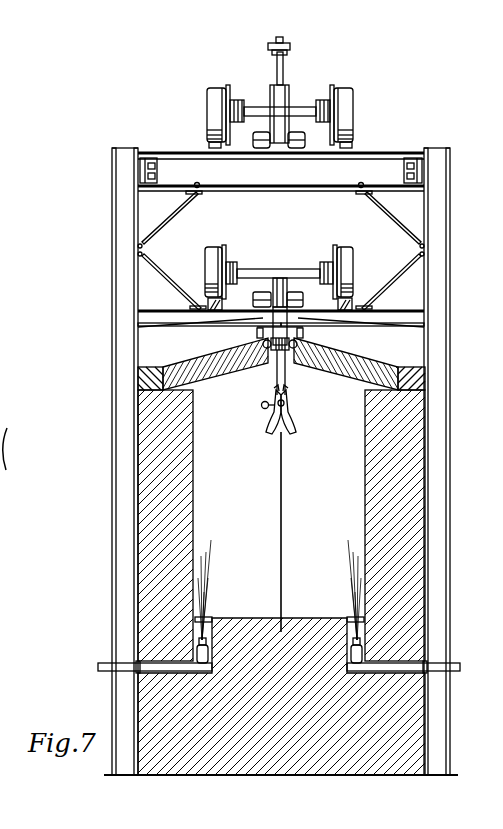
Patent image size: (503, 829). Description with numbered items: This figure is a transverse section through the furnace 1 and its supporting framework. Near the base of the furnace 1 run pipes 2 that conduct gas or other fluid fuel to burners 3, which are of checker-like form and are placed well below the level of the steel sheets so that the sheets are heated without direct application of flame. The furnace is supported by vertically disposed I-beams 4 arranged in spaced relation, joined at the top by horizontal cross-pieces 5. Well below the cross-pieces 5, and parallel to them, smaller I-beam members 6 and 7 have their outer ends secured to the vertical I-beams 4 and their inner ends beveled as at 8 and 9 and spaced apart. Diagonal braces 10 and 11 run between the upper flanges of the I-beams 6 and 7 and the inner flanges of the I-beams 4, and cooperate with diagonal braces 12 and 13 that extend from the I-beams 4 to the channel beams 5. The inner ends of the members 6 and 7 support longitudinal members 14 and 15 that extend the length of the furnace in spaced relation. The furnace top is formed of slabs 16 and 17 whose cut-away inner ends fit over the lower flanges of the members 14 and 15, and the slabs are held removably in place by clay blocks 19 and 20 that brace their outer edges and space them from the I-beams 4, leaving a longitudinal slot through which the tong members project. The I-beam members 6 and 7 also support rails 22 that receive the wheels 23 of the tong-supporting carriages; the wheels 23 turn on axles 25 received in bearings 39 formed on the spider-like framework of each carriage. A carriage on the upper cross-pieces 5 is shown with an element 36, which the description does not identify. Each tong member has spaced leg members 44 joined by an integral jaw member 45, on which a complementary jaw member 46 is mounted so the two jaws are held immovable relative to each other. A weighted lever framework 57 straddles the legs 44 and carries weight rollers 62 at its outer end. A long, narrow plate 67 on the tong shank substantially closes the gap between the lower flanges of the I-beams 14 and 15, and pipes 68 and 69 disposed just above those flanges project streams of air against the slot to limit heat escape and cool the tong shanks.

The furnace 1 is at (165, 514).
The pipes 2 is at (130, 667).
The burners 3 is at (212, 619).
The I-beams 4 is at (120, 563).
The top cross-pieces 5 is at (372, 172).
The I-beam member 6 is at (150, 318).
The I-beam member 7 is at (400, 323).
The beveled inner end 8 is at (220, 329).
The beveled inner end 9 is at (340, 329).
The diagonal brace 10 is at (158, 286).
The diagonal brace 11 is at (405, 284).
The diagonal brace 12 is at (162, 214).
The diagonal brace 13 is at (392, 214).
The longitudinal member 14 is at (257, 332).
The longitudinal member 15 is at (300, 333).
The slab 16 is at (222, 364).
The slab 17 is at (360, 366).
The clay block 19 is at (148, 375).
The clay block 20 is at (410, 373).
The rails 22 is at (354, 302).
The wheels 23 is at (217, 90).
The axles 25 is at (298, 108).
The guide roller 36 is at (207, 146).
The bearings 39 is at (235, 266).
The leg members 44 is at (284, 64).
The jaw member 45 is at (271, 427).
The jaw member 46 is at (294, 427).
The weighted lever framework 57 is at (272, 96).
The weight rollers 62 is at (257, 299).
The plate 67 is at (291, 47).
The pipe 68 is at (270, 352).
The pipe 69 is at (292, 350).